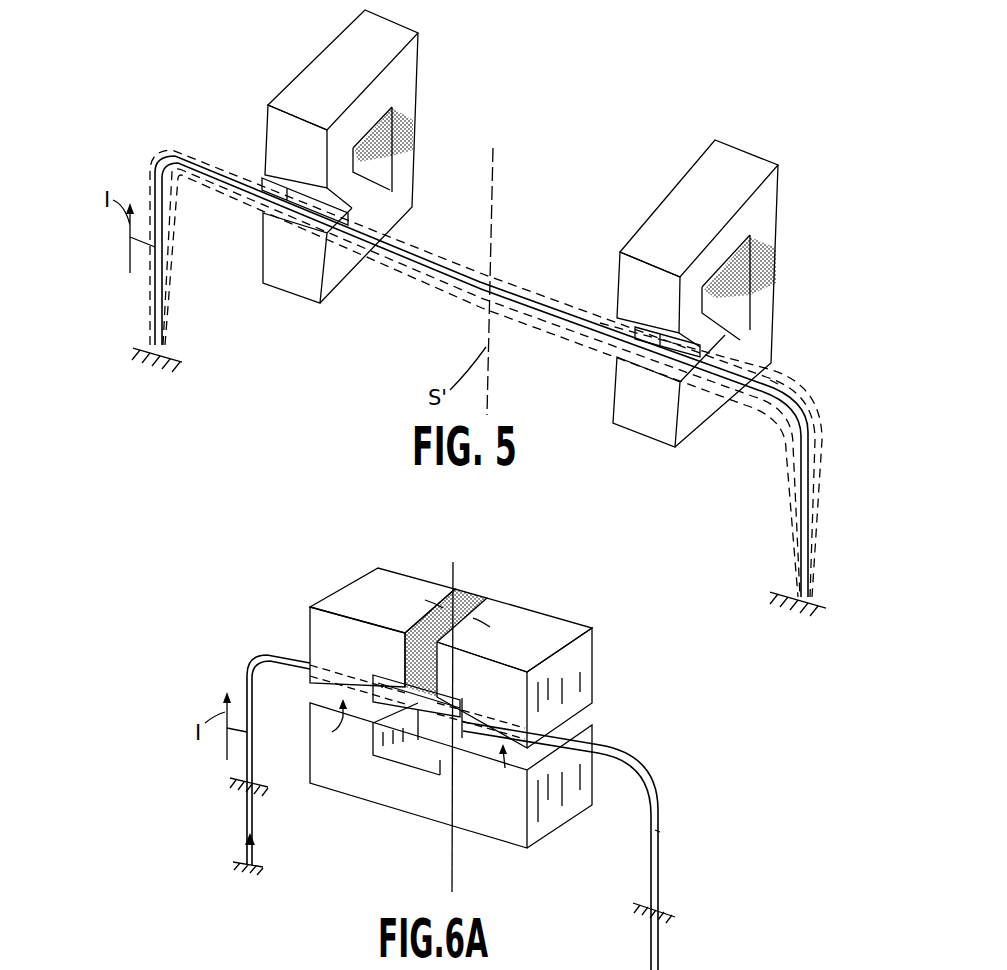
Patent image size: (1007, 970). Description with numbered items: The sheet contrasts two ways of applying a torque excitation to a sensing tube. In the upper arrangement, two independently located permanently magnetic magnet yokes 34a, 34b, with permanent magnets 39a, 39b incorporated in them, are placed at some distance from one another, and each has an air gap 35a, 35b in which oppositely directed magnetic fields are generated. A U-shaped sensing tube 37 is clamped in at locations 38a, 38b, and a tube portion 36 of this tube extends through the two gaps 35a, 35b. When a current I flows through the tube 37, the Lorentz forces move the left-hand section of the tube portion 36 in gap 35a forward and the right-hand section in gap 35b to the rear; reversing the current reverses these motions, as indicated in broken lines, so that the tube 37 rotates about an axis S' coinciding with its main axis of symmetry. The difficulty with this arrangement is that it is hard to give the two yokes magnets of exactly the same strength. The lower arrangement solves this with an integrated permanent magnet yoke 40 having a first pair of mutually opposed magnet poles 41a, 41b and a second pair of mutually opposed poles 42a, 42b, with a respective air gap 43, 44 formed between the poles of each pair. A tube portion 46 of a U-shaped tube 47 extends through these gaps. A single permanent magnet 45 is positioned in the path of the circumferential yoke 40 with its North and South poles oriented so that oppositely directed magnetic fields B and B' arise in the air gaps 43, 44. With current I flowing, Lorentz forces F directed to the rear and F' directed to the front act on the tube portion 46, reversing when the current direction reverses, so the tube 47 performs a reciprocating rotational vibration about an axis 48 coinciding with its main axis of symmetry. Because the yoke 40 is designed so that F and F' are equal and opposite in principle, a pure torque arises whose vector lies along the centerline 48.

In FIG. 5, the magnet yoke 34a is at (312, 88).
In FIG. 5, the magnet yoke 34b is at (735, 172).
In FIG. 5, the air gap 35a is at (330, 233).
In FIG. 5, the air gap 35b is at (620, 353).
In FIG. 5, the tube portion 36 is at (548, 300).
In FIG. 5, the U-shaped sensing tube 37 is at (788, 375).
In FIG. 5, the clamping location 38a is at (180, 357).
In FIG. 5, the clamping location 38b is at (780, 590).
In FIG. 5, the permanent magnet 39a is at (402, 125).
In FIG. 5, the permanent magnet 39b is at (773, 253).
In FIG. 6A, the integrated permanent magnet yoke 40 is at (556, 607).
In FIG. 6A, the magnet pole 41a is at (325, 637).
In FIG. 6A, the magnet pole 41b is at (362, 733).
In FIG. 6A, the magnet pole 42a is at (573, 658).
In FIG. 6A, the magnet pole 42b is at (507, 817).
In FIG. 6A, the air gap 43 is at (343, 707).
In FIG. 6A, the air gap 44 is at (572, 728).
In FIG. 6A, the permanent magnet 45 is at (485, 593).
In FIG. 6A, the tube portion 46 is at (623, 753).
In FIG. 6A, the U-shaped tube 47 is at (668, 842).
In FIG. 6A, the axis 48 is at (452, 858).